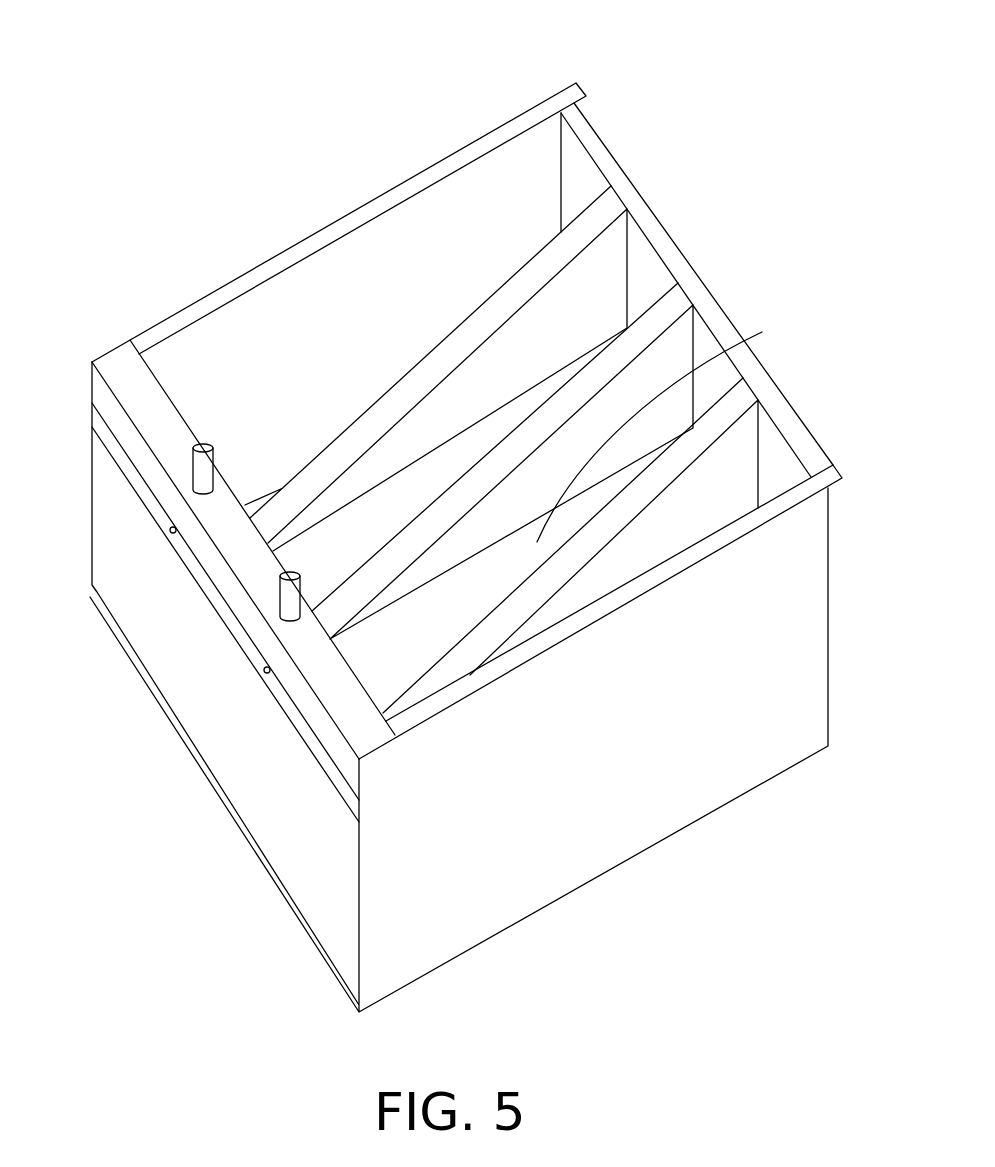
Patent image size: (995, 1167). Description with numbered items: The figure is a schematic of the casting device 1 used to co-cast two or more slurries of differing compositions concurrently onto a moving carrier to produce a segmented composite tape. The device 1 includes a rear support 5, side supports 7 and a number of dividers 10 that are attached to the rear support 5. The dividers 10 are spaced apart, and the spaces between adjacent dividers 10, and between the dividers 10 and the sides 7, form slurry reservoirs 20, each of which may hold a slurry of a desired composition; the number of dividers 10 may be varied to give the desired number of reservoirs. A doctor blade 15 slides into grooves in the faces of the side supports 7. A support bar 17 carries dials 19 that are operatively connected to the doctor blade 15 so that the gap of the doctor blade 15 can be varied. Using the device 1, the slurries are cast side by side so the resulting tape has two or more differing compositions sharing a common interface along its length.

The device 1 is at (467, 384).
The rear support 5 is at (660, 227).
The side supports 7 is at (836, 467).
The dividers 10 is at (630, 187).
The doctor blade 15 is at (90, 498).
The support bar 17 is at (116, 344).
The dials 19 is at (203, 445).
The slurry reservoirs 20 is at (667, 424).